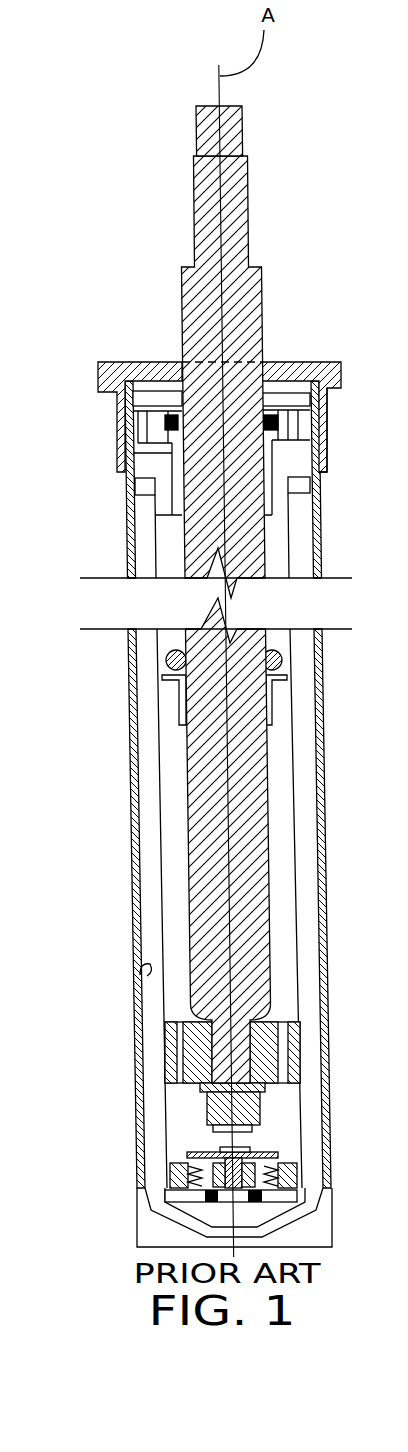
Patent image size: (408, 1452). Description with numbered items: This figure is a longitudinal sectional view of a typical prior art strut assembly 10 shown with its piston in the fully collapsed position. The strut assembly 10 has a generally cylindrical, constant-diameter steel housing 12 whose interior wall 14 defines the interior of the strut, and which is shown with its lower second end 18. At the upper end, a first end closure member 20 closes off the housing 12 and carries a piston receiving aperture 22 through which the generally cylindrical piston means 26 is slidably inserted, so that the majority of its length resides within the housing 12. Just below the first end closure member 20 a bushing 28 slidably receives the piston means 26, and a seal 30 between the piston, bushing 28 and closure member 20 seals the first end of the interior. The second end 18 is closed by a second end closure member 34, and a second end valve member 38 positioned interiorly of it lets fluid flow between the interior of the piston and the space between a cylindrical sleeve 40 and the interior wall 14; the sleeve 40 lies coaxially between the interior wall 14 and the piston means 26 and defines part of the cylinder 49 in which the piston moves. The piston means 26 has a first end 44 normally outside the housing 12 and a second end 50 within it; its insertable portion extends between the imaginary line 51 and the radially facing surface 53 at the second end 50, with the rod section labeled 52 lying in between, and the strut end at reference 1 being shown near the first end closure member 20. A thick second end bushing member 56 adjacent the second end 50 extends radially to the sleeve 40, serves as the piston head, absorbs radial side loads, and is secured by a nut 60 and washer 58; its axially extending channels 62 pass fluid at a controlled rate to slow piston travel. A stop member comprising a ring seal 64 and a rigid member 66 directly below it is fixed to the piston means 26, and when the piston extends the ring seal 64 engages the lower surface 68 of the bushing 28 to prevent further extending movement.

The gas spring end cap region 1 is at (340, 351).
The strut assembly 10 is at (147, 167).
The housing 12 is at (127, 849).
The interior wall 14 is at (160, 992).
The second end 18 is at (132, 1255).
The first end closure member 20 is at (107, 355).
The piston receiving aperture 22 is at (180, 363).
The piston means 26 is at (272, 293).
The bushing 28 is at (174, 452).
The seal 30 is at (175, 412).
The second end closure member 34 is at (293, 1217).
The second end valve member 38 is at (167, 1178).
The cylindrical sleeve 40 is at (140, 975).
The first end 44 is at (244, 118).
The cylinder 49 is at (173, 806).
The second end 50 is at (265, 1110).
The imaginary line 51 is at (236, 362).
The rod portion 52 is at (203, 900).
The radially facing surface 53 is at (210, 1134).
The second end bushing member 56 is at (164, 1070).
The washer 58 is at (200, 1088).
The nut 60 is at (207, 1106).
The axially extending channels 62 is at (177, 1023).
The ring seal 64 is at (176, 650).
The rigid member 66 is at (166, 676).
The lower surface 68 is at (178, 518).